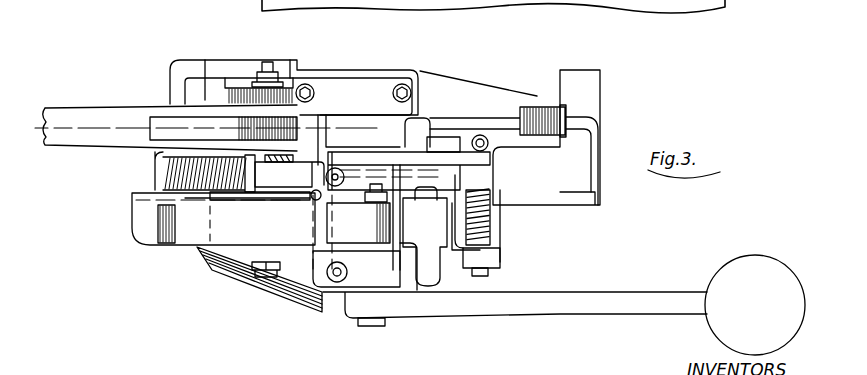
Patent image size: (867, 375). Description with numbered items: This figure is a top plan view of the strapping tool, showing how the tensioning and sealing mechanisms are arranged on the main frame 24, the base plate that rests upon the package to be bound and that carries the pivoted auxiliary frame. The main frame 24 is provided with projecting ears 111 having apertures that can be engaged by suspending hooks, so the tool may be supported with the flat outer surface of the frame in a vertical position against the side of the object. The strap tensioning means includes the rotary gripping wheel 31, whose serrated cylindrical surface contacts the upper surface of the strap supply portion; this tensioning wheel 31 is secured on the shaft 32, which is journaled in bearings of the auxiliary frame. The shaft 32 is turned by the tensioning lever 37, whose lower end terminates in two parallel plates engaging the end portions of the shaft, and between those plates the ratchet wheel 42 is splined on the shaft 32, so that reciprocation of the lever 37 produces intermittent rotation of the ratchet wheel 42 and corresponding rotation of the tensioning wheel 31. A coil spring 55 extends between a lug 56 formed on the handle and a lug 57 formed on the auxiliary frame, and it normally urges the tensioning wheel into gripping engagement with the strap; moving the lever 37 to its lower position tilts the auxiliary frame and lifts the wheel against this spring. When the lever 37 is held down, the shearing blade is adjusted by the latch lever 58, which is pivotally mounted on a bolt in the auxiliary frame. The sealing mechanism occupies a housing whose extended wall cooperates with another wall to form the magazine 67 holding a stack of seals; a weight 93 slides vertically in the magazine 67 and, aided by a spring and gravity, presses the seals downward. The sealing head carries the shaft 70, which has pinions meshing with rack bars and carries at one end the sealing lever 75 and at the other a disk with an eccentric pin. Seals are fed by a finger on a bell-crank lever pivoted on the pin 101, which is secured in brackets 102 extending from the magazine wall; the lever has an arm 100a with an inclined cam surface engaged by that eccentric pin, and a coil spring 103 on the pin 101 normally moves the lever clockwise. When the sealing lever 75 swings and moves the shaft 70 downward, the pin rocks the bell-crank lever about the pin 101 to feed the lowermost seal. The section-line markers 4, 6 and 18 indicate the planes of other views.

The section line 4- 4 is at (578, 28).
The section line 6- 6 is at (103, 222).
The section line 18- 18 is at (60, 117).
The base plate or frame 24 is at (515, 148).
The rotary gripping wheel 31 is at (243, 251).
The shaft 32 is at (266, 62).
The tensioning lever 37 is at (93, 113).
The ratchet wheel 42 is at (240, 128).
The coil spring 55 is at (205, 193).
The lug 56 is at (155, 172).
The lug 57 is at (248, 163).
The latch lever 58 is at (146, 232).
The magazine 67 is at (425, 212).
The shaft 70 is at (377, 327).
The sealing lever 75 is at (563, 292).
The weight 93 is at (435, 280).
The arm 100a is at (408, 155).
The pin 101 is at (488, 276).
The brackets 102 is at (496, 252).
The coil spring 103 is at (492, 206).
The projecting ears 111 is at (540, 107).